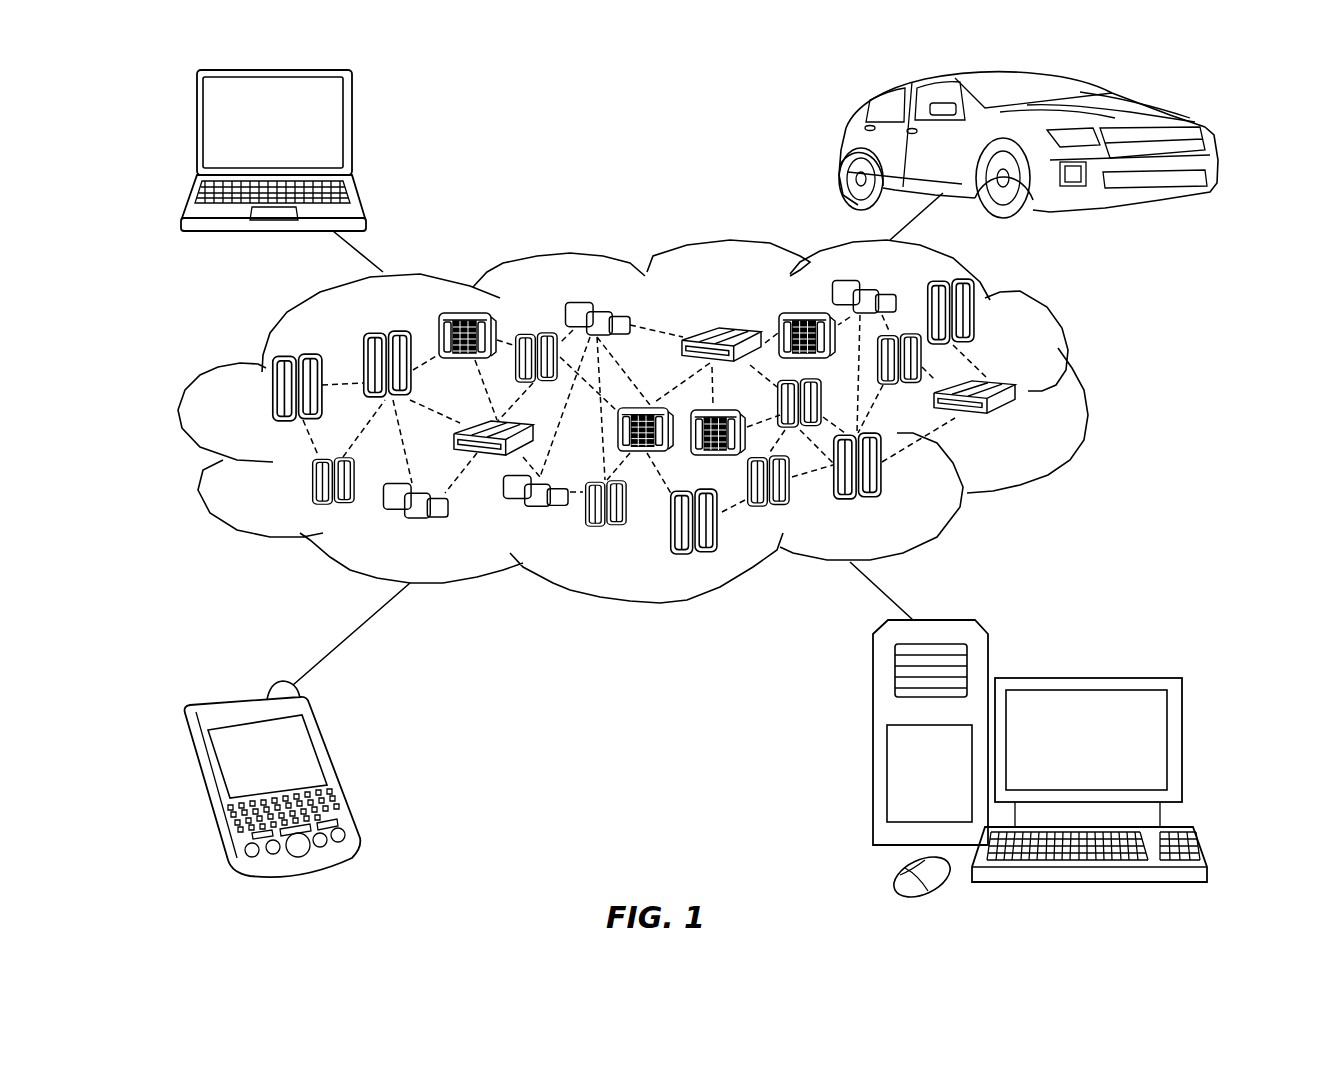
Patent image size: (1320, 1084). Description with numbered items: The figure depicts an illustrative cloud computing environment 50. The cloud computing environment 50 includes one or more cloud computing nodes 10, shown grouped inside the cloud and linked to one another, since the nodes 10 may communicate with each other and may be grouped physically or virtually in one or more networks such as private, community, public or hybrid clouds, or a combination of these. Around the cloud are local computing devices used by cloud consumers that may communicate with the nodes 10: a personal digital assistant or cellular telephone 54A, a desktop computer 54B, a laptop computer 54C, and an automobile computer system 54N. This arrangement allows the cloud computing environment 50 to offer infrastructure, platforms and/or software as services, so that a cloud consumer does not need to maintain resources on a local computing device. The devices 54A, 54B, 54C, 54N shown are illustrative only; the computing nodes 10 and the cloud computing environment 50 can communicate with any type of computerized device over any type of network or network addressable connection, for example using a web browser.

The cloud computing node 10 is at (1022, 426).
The cloud computing environment 50 is at (1086, 398).
The personal digital assistant or cellular telephone 54A is at (338, 770).
The desktop computer 54B is at (1085, 677).
The laptop computer 54C is at (352, 131).
The automobile computer system 54N is at (838, 148).